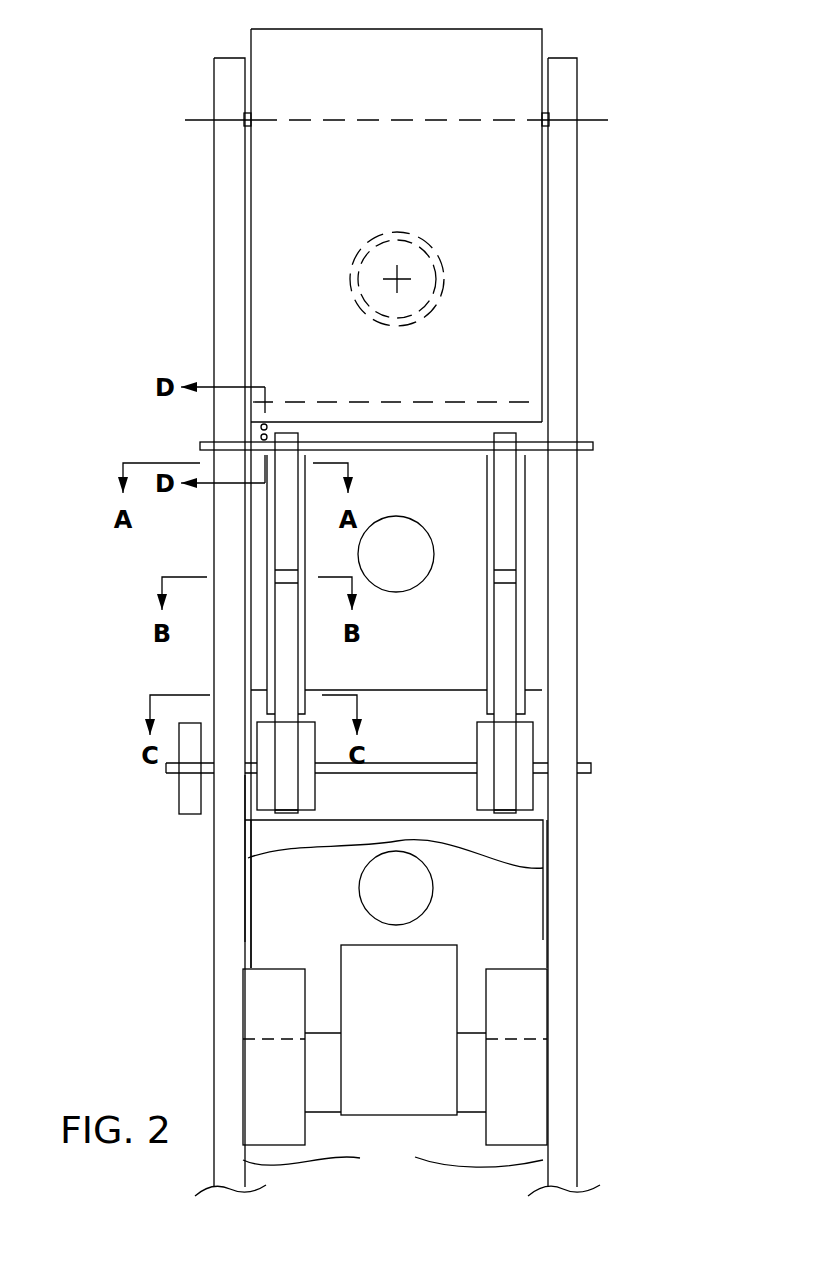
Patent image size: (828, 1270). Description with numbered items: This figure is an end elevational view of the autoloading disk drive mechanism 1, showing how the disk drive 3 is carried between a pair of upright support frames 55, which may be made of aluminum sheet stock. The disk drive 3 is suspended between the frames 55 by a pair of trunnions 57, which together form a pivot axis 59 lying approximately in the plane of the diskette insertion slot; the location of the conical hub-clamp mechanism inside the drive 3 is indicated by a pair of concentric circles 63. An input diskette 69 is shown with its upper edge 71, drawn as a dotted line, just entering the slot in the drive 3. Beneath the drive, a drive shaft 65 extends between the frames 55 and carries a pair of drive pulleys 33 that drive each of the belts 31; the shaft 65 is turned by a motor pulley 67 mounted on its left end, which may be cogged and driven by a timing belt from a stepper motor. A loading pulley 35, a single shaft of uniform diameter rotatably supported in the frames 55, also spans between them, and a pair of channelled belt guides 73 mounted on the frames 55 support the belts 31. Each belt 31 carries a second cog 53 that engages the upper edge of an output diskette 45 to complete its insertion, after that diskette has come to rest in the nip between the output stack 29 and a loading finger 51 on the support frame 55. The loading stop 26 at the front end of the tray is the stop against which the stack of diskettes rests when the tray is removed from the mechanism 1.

The autoloading disk drive mechanism 1 is at (136, 341).
The disk drive 3 is at (214, 26).
The loading stop 26 is at (408, 1068).
The output stack 29 is at (330, 840).
The belt 31 is at (282, 807).
The drive pulley 33 is at (262, 800).
The loading pulley 35 is at (205, 447).
The output diskette 45 is at (249, 903).
The loading finger 51 is at (286, 1106).
The second cog 53 is at (286, 578).
The support frame 55 is at (412, 1157).
The trunnion 57 is at (249, 128).
The pivot axis 59 is at (590, 118).
The concentric circles 63 is at (376, 240).
The drive shaft 65 is at (172, 770).
The motor pulley 67 is at (190, 795).
The input diskette 69 is at (431, 666).
The upper edge 71 is at (428, 400).
The channelled belt guide 73 is at (271, 548).